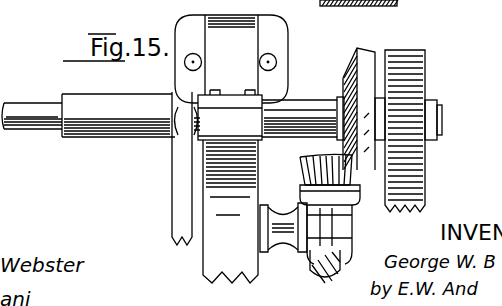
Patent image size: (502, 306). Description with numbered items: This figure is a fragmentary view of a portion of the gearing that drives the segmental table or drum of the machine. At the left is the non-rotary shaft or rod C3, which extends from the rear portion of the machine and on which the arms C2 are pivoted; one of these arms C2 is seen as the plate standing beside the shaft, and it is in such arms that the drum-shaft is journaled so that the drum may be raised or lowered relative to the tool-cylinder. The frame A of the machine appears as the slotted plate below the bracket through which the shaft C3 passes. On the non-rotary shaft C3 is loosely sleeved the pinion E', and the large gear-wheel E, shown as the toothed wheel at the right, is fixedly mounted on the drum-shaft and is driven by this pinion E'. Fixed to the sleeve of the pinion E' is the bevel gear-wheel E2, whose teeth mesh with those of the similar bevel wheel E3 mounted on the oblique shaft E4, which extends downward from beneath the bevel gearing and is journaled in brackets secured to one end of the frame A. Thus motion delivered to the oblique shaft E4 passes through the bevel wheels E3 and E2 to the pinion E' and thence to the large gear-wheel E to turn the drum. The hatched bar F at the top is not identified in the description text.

The frame A is at (223, 255).
The arms C2 is at (180, 198).
The non-rotary shaft or rod C3 is at (38, 133).
The large gear-wheel E is at (419, 132).
The pinion E' is at (450, 103).
The bevel gear-wheel E2 is at (352, 66).
The bevel gear-wheel E3 is at (309, 162).
The oblique shaft E4 is at (318, 262).
The frame bar F is at (397, 3).